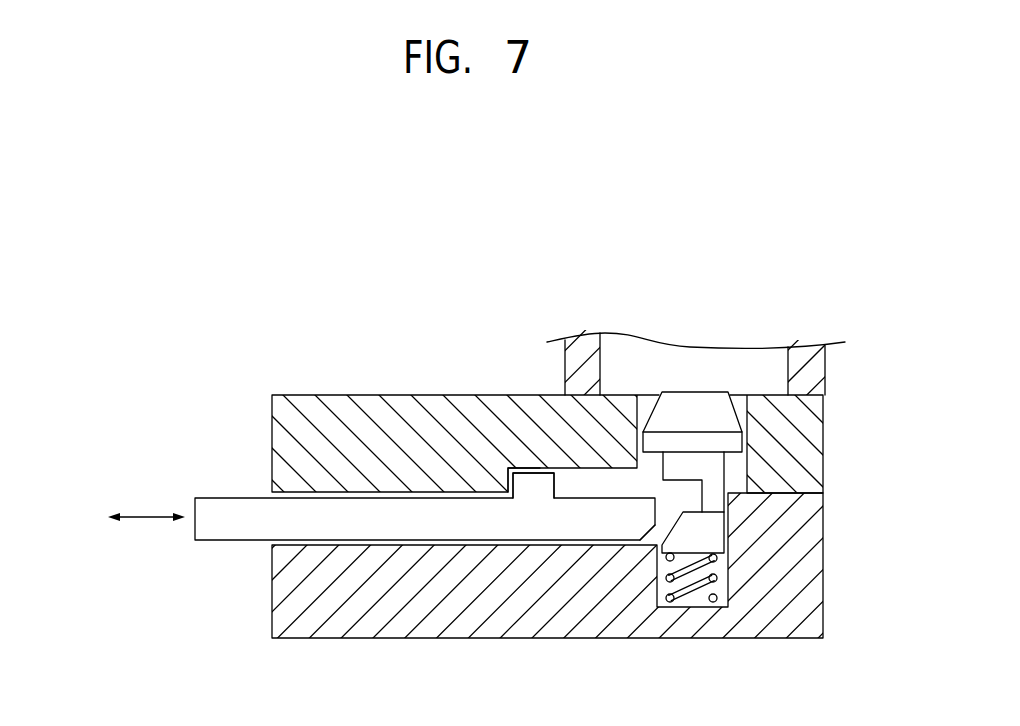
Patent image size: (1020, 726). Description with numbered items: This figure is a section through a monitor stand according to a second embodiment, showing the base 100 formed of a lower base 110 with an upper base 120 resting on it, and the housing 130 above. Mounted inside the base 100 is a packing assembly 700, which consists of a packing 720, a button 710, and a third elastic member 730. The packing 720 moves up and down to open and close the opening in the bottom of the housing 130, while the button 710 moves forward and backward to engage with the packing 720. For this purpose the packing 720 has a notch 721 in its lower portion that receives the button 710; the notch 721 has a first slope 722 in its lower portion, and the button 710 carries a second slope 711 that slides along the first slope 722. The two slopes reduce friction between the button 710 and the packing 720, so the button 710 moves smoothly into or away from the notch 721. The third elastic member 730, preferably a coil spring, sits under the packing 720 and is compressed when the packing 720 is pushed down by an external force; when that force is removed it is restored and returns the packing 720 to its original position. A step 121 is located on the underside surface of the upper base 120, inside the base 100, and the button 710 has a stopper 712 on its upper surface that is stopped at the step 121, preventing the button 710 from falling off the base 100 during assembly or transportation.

The base 100 is at (97, 443).
The lower base 110 is at (278, 625).
The upper base 120 is at (280, 440).
The step 121 is at (492, 462).
The housing 130 is at (810, 375).
The packing assembly 700 is at (712, 370).
The button 710 is at (238, 532).
The second slope 711 is at (652, 540).
The stopper 712 is at (532, 485).
The packing 720 is at (744, 413).
The notch 721 is at (688, 495).
The first slope 722 is at (673, 528).
The third elastic member 730 is at (718, 603).